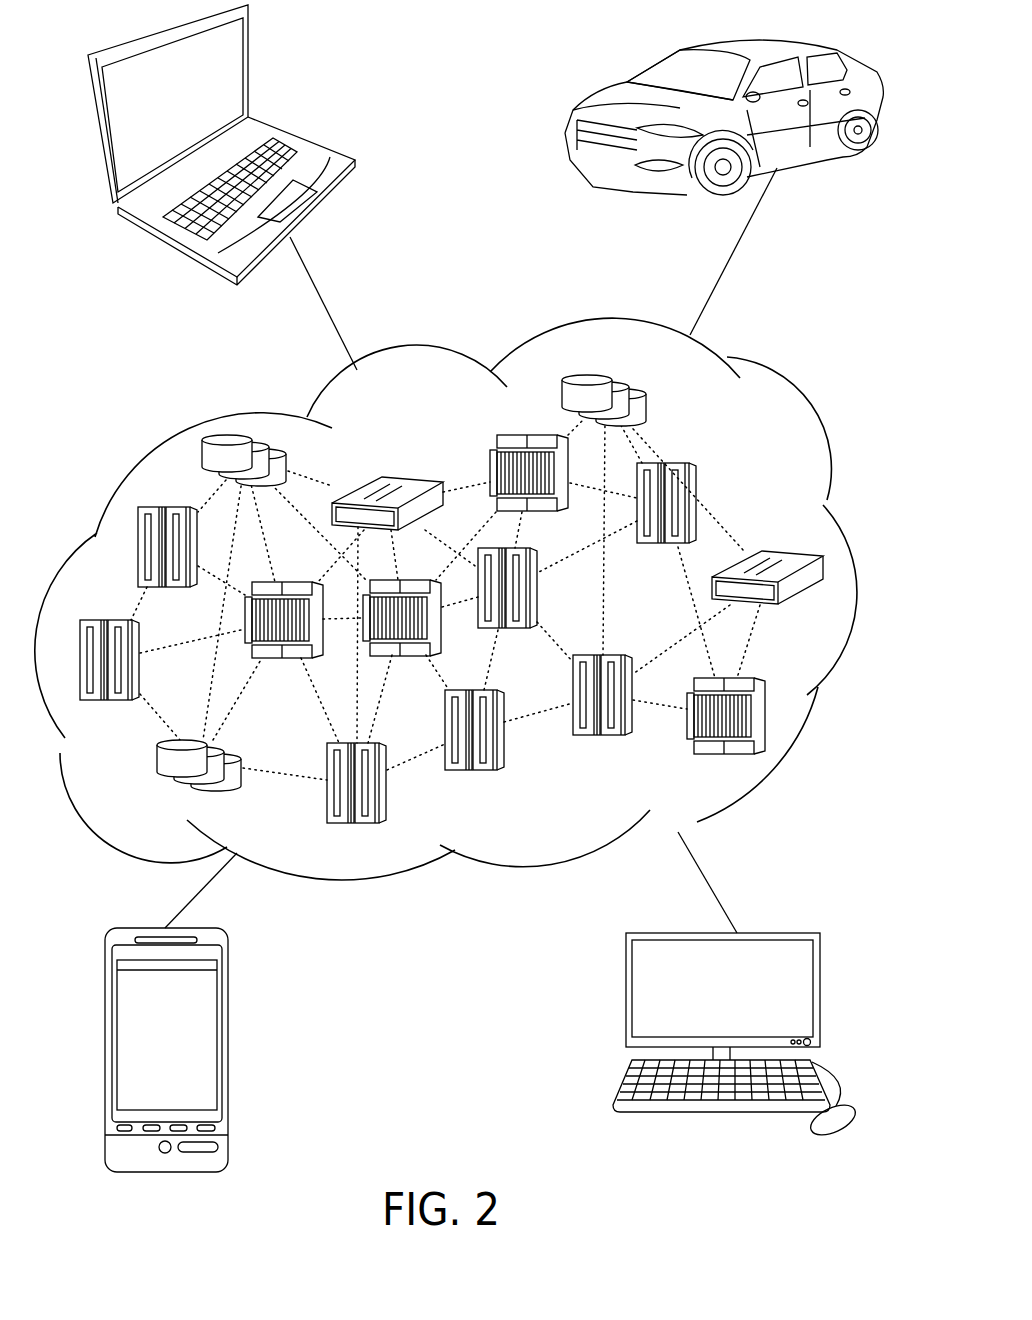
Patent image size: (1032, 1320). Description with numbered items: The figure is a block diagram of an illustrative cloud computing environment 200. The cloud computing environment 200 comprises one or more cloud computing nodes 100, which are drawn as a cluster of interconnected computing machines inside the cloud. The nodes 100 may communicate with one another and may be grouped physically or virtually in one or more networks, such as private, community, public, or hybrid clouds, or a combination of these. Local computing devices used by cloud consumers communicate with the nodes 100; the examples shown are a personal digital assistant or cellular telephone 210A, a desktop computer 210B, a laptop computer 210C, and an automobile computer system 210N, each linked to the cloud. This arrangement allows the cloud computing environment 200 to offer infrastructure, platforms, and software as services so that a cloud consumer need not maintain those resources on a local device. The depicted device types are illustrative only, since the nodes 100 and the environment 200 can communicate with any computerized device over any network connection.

The cloud computing environment 200 is at (800, 388).
The cloud computing node 100 is at (790, 545).
The personal digital assistant or cellular telephone 210A is at (227, 955).
The desktop computer 210B is at (822, 952).
The laptop computer 210C is at (312, 143).
The automobile computer system 210N is at (837, 50).